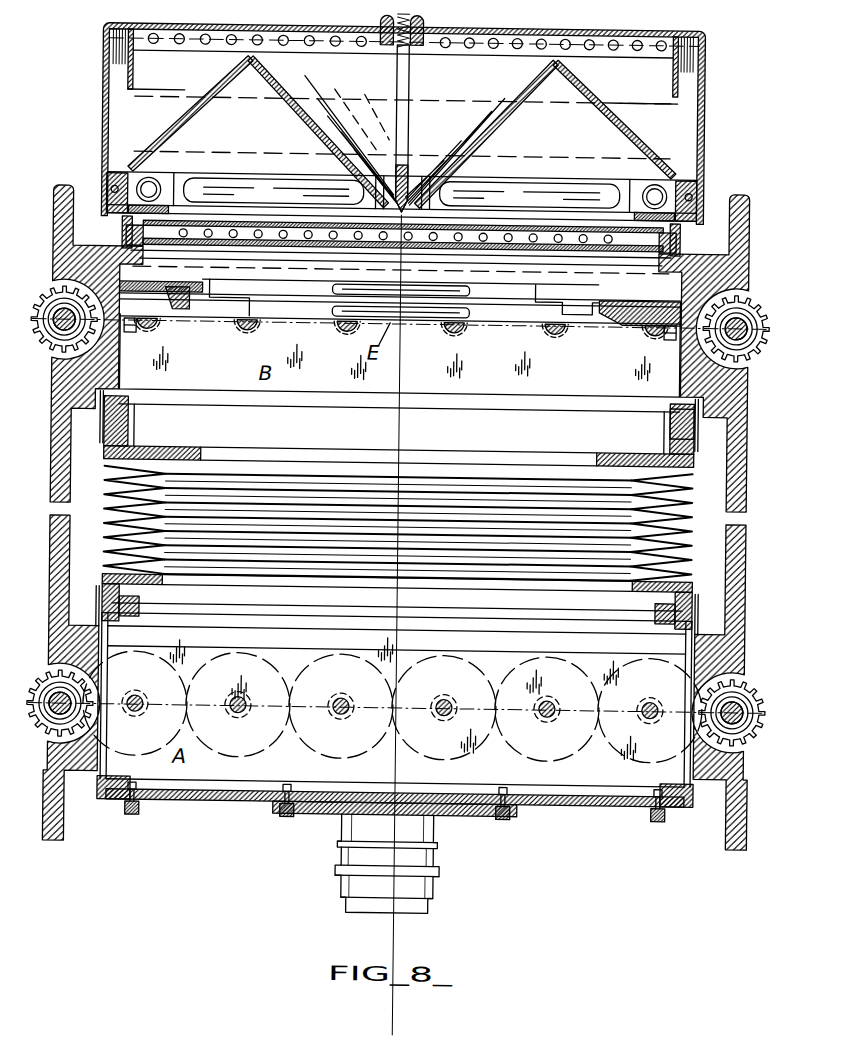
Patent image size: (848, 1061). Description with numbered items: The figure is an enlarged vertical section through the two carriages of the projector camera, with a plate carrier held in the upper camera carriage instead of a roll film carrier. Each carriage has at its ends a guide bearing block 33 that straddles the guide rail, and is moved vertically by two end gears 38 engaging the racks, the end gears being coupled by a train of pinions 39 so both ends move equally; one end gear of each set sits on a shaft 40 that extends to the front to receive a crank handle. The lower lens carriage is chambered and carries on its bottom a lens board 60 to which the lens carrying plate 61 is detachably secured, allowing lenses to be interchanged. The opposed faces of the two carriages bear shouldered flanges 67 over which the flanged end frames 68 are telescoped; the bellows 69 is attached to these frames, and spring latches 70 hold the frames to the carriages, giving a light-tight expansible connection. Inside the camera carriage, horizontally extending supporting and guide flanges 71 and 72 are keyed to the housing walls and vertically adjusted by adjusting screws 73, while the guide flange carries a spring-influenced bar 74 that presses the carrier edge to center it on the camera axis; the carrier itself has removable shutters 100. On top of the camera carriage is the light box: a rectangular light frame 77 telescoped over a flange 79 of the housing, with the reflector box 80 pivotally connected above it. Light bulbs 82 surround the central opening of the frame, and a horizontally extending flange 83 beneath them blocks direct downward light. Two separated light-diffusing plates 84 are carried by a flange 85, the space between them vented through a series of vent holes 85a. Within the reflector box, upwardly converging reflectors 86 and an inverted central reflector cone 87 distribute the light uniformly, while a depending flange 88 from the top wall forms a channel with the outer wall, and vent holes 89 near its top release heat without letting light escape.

The guide bearing block 33 is at (49, 492).
The end gear 38 is at (55, 294).
The train of pinions 39 is at (308, 749).
The shaft 40 is at (54, 328).
The lens board 60 is at (167, 801).
The lens carrying plate 61 is at (276, 818).
The shouldered flange 67 is at (677, 423).
The flanged end frame 68 is at (122, 432).
The bellows 69 is at (118, 500).
The spring latch 70 is at (100, 445).
The supporting and guide flange 71 is at (628, 323).
The guide flange 72 is at (170, 313).
The adjusting screw 73 is at (129, 336).
The spring-influenced bar 74 is at (176, 307).
The light frame 77 is at (103, 182).
The flange 79 is at (122, 243).
The reflector box 80 is at (103, 124).
The light bulb 82 is at (197, 181).
The horizontally extending flange 83 is at (300, 208).
The light-diffusing plate 84 is at (330, 238).
The flange 85 is at (150, 245).
The vent holes 85a is at (460, 247).
The upwardly converging reflector 86 is at (186, 104).
The reflector cone 87 is at (312, 120).
The depending flange 88 is at (130, 92).
The vent holes 89 is at (208, 33).
The removable shutter 100 is at (438, 312).